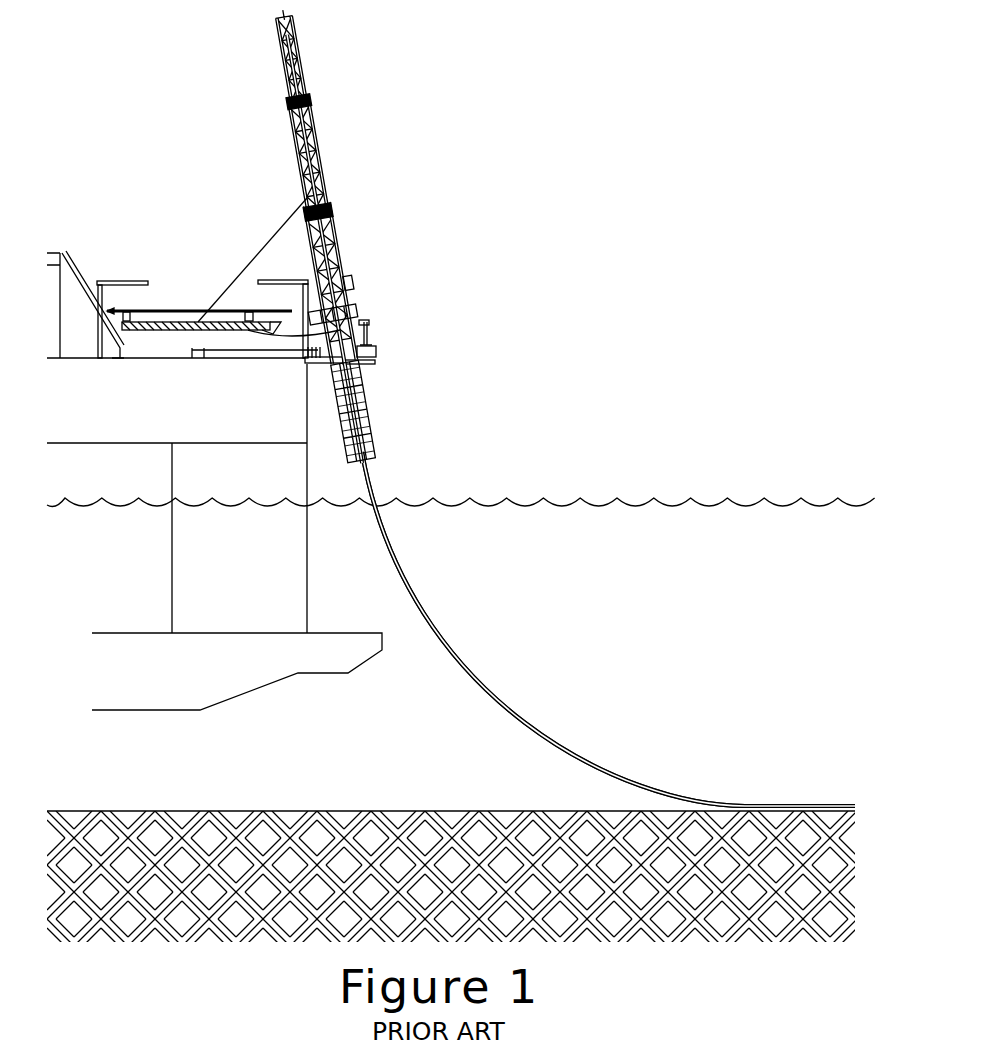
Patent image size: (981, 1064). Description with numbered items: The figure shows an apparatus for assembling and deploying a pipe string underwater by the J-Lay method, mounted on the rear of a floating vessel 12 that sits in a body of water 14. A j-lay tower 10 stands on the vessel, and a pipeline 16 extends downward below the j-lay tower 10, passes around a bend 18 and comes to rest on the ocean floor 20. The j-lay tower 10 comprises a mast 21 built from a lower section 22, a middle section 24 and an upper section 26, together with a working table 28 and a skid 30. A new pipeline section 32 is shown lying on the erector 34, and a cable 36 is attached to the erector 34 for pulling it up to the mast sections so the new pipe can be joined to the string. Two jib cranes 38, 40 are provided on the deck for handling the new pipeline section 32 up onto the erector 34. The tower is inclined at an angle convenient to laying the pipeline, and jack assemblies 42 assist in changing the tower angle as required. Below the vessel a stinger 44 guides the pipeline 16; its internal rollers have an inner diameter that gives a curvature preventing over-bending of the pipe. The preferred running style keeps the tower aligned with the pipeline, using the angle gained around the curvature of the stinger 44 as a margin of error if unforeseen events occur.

The j-lay tower 10 is at (370, 237).
The floating vessel 12 is at (183, 467).
The body of water 14 is at (555, 497).
The pipeline 16 is at (443, 637).
The bend 18 is at (505, 703).
The ocean floor 20 is at (243, 811).
The mast 21 is at (347, 88).
The lower section 22 is at (347, 253).
The middle section 24 is at (323, 135).
The upper section 26 is at (302, 47).
The working table 28 is at (360, 318).
The skid 30 is at (371, 353).
The new pipeline section 32 is at (175, 308).
The erector 34 is at (198, 322).
The cable 36 is at (275, 230).
The jib crane 38 is at (264, 280).
The jib crane 40 is at (109, 281).
The jack assemblies 42 is at (368, 330).
The stinger 44 is at (370, 407).